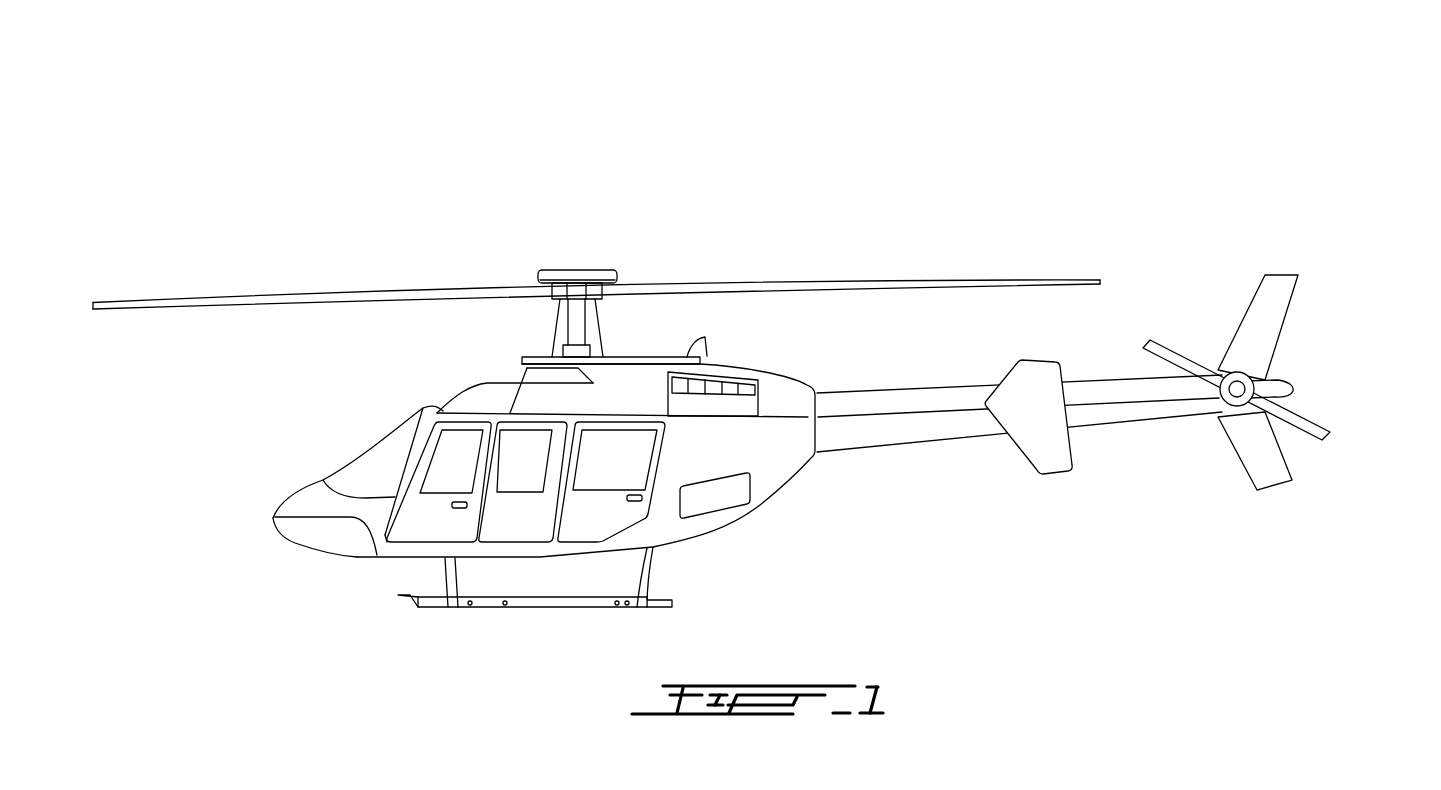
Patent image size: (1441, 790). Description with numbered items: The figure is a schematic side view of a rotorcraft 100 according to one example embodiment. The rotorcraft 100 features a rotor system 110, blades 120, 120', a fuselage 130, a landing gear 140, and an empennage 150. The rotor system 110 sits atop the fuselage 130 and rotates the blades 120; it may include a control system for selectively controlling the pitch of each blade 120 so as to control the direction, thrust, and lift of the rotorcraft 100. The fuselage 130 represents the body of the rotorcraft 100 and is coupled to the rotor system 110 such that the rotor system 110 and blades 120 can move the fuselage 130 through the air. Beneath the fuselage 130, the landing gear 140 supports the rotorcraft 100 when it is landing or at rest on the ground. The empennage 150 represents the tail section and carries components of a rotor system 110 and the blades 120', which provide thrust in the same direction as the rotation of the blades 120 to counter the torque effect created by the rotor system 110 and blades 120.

The rotorcraft 100 is at (306, 148).
The rotor system 110 is at (579, 270).
The blades 120 is at (596, 250).
The blades 120' is at (1284, 390).
The fuselage 130 is at (323, 552).
The landing gear 140 is at (488, 608).
The empennage 150 is at (922, 445).